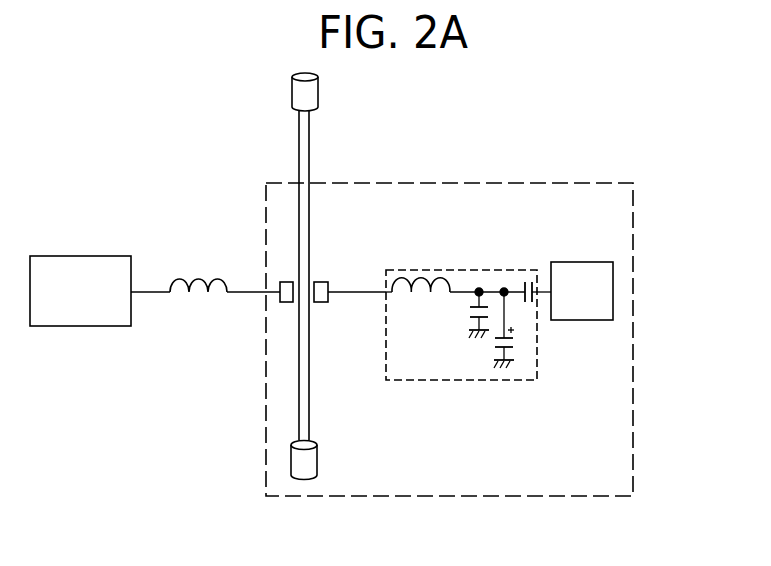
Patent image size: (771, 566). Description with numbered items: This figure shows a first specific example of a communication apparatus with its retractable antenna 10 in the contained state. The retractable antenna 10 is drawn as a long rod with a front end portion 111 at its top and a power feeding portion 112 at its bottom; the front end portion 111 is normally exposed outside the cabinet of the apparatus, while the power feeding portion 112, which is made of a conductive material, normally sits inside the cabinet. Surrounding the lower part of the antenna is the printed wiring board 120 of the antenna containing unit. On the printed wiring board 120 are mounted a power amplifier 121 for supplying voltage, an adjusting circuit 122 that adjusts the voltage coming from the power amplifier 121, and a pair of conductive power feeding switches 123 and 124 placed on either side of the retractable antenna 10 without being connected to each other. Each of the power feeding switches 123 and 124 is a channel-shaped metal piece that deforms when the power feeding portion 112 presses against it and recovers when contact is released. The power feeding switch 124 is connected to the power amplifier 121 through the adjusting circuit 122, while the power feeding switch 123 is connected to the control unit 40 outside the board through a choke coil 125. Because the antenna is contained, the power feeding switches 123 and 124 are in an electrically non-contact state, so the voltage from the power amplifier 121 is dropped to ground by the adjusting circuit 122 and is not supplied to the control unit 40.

The retractable antenna 10 is at (299, 138).
The control unit 40 is at (108, 326).
The front end portion 111 is at (292, 90).
The power feeding portion 112 is at (317, 468).
The printed wiring board 120 is at (622, 211).
The power amplifier 121 is at (600, 320).
The adjusting circuit 122 is at (518, 381).
The power feeding switch 123 is at (286, 302).
The power feeding switch 124 is at (323, 302).
The choke coil 125 is at (205, 273).